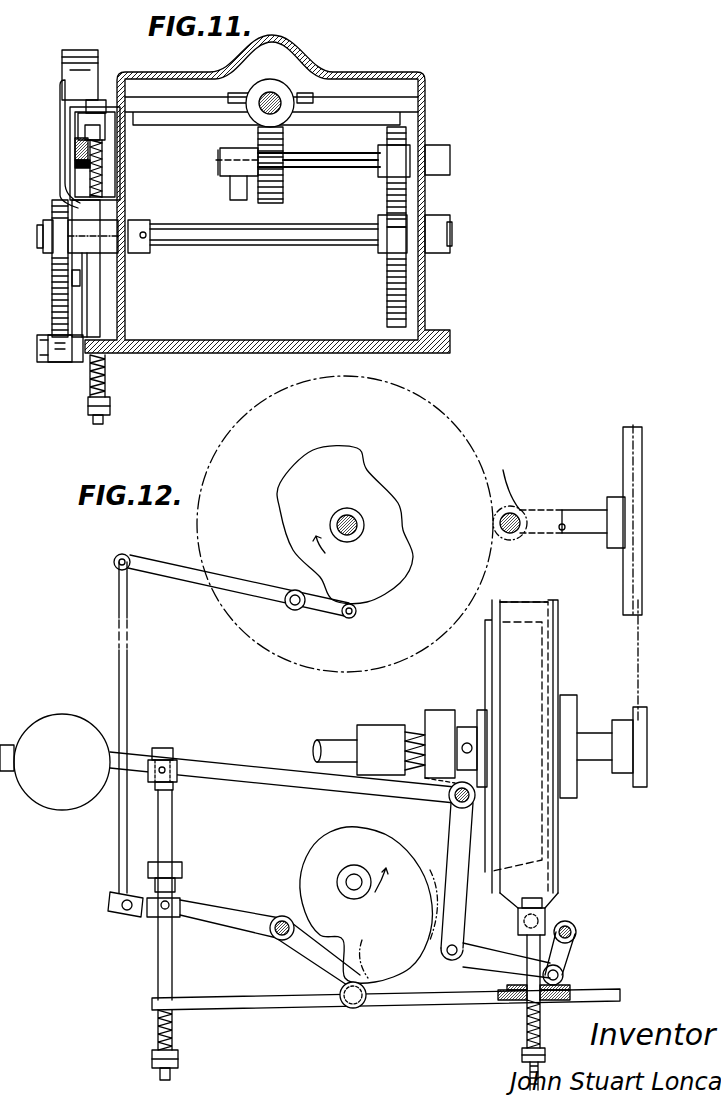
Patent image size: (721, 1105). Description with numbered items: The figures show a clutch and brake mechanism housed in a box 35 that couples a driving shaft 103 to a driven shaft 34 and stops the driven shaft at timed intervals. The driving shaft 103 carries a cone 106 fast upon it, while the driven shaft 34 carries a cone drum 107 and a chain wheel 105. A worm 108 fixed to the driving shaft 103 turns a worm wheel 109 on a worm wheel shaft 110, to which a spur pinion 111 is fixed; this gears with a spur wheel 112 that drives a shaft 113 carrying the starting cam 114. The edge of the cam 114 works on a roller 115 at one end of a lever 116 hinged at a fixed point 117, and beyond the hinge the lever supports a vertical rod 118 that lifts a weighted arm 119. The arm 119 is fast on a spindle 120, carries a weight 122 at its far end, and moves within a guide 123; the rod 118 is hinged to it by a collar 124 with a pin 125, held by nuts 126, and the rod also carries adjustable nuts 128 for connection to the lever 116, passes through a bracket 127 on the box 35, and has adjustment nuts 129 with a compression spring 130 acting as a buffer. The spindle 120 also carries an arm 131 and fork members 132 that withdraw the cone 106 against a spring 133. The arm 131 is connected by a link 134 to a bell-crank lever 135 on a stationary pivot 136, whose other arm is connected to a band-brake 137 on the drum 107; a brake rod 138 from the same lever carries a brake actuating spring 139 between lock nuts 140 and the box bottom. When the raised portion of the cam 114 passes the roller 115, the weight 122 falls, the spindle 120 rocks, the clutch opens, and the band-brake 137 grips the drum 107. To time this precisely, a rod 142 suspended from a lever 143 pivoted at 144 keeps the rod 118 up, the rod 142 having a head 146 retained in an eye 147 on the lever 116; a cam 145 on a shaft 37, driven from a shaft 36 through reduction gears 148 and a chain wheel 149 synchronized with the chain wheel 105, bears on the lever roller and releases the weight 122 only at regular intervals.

In FIG. 11, the box 35 is at (378, 74).
In FIG. 12, the box 35 is at (268, 1002).
In FIG. 11, the worm 108 is at (284, 92).
In FIG. 11, the driving shaft 103 is at (263, 95).
In FIG. 12, the driving shaft 103 is at (330, 750).
In FIG. 11, the worm wheel 109 is at (283, 188).
In FIG. 11, the worm wheel shaft 110 is at (342, 160).
In FIG. 11, the spur pinion 111 is at (408, 143).
In FIG. 11, the spur wheel 112 is at (406, 280).
In FIG. 11, the shaft 113 is at (238, 242).
In FIG. 12, the shaft 113 is at (346, 880).
In FIG. 11, the starting cam 114 is at (58, 270).
In FIG. 12, the starting cam 114 is at (312, 858).
In FIG. 11, the roller 115 is at (58, 362).
In FIG. 12, the roller 115 is at (356, 1008).
In FIG. 11, the lever 116 is at (84, 312).
In FIG. 12, the lever 116 is at (225, 905).
In FIG. 11, the fixed point 117 is at (73, 282).
In FIG. 12, the fixed point 117 is at (275, 934).
In FIG. 11, the vertical rod 118 is at (103, 170).
In FIG. 12, the vertical rod 118 is at (166, 825).
In FIG. 11, the weighted arm 119 is at (78, 148).
In FIG. 12, the weighted arm 119 is at (272, 782).
In FIG. 12, the spindle 120 is at (450, 800).
In FIG. 12, the weight 122 is at (78, 800).
In FIG. 11, the guide 123 is at (75, 167).
In FIG. 11, the collar 124 is at (80, 118).
In FIG. 12, the collar 124 is at (180, 768).
In FIG. 12, the pin 125 is at (160, 775).
In FIG. 11, the nuts 126 is at (100, 100).
In FIG. 12, the nuts 126 is at (166, 752).
In FIG. 12, the bracket 127 is at (175, 868).
In FIG. 12, the adjustable nuts 128 is at (172, 892).
In FIG. 11, the adjustment nuts 129 is at (88, 406).
In FIG. 12, the adjustment nuts 129 is at (178, 1057).
In FIG. 11, the compression spring 130 is at (90, 385).
In FIG. 12, the compression spring 130 is at (173, 1020).
In FIG. 12, the arm 131 is at (448, 838).
In FIG. 12, the fork members 132 is at (478, 760).
In FIG. 12, the spring 133 is at (412, 730).
In FIG. 12, the link 134 is at (490, 942).
In FIG. 12, the bell-crank lever 135 is at (566, 950).
In FIG. 12, the stationary pivot 136 is at (574, 928).
In FIG. 12, the band-brake 137 is at (530, 610).
In FIG. 12, the brake rod 138 is at (541, 1022).
In FIG. 12, the brake actuating spring 139 is at (522, 1004).
In FIG. 12, the lock nuts 140 is at (522, 1052).
In FIG. 11, the rod 142 is at (60, 88).
In FIG. 12, the rod 142 is at (127, 668).
In FIG. 12, the lever 143 is at (214, 590).
In FIG. 12, the pivot 144 is at (295, 610).
In FIG. 12, the cam 145 is at (364, 477).
In FIG. 12, the head 146 is at (112, 905).
In FIG. 12, the eye 147 is at (115, 893).
In FIG. 12, the reduction gears 148 is at (480, 474).
In FIG. 12, the chain wheel 149 is at (628, 470).
In FIG. 12, the shaft 36 is at (562, 520).
In FIG. 12, the shaft 37 is at (340, 515).
In FIG. 12, the driven shaft 34 is at (597, 740).
In FIG. 12, the chain wheel 105 is at (637, 785).
In FIG. 12, the cone 106 is at (486, 632).
In FIG. 12, the cone drum 107 is at (560, 612).